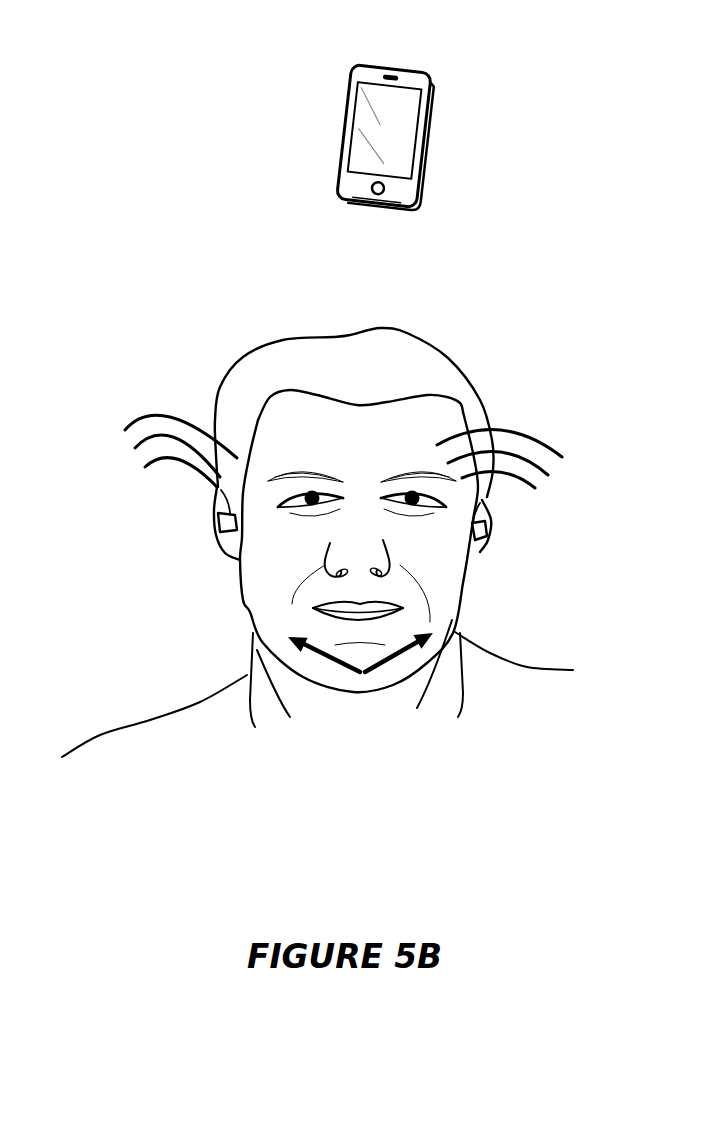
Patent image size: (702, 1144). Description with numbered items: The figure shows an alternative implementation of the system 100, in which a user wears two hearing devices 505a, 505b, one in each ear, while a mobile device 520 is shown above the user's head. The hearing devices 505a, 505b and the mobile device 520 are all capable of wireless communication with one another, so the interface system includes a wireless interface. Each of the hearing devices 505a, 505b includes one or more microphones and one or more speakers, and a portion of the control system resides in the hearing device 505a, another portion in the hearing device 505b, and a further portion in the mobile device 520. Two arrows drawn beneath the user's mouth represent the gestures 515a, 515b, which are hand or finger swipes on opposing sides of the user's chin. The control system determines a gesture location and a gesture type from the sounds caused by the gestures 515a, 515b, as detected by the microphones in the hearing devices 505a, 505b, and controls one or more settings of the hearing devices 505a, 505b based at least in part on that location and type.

The system 100 is at (122, 642).
The mobile device 520 is at (350, 50).
The hearing device 505a is at (230, 537).
The hearing device 505b is at (487, 538).
The gesture 515a is at (337, 663).
The gesture 515b is at (388, 665).